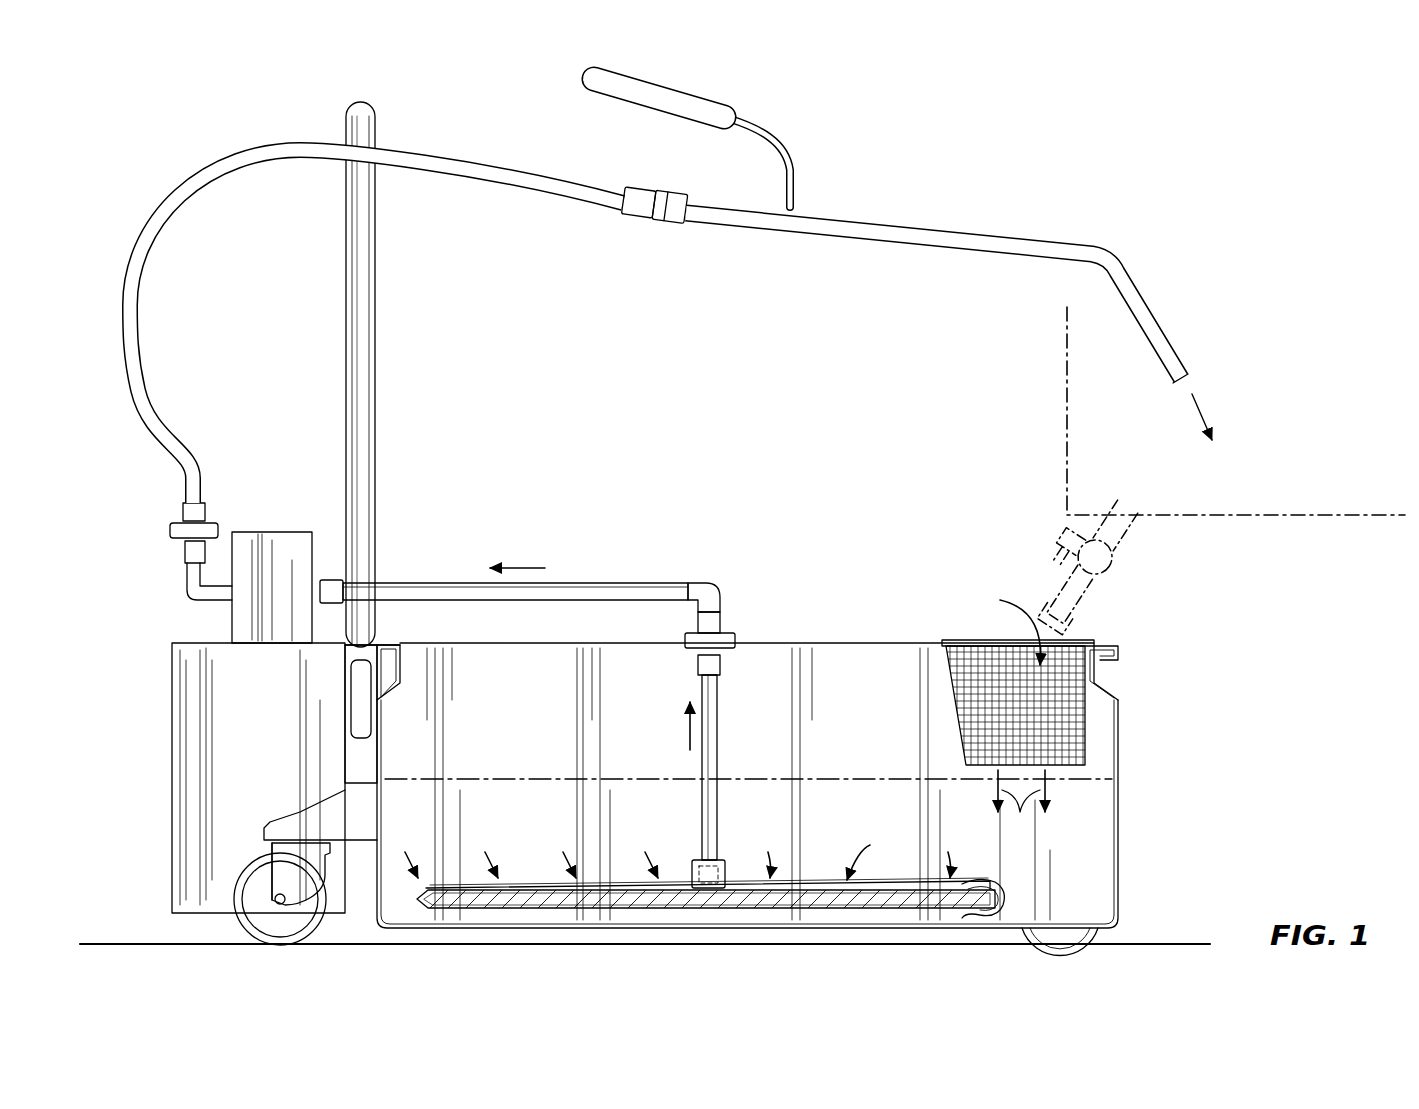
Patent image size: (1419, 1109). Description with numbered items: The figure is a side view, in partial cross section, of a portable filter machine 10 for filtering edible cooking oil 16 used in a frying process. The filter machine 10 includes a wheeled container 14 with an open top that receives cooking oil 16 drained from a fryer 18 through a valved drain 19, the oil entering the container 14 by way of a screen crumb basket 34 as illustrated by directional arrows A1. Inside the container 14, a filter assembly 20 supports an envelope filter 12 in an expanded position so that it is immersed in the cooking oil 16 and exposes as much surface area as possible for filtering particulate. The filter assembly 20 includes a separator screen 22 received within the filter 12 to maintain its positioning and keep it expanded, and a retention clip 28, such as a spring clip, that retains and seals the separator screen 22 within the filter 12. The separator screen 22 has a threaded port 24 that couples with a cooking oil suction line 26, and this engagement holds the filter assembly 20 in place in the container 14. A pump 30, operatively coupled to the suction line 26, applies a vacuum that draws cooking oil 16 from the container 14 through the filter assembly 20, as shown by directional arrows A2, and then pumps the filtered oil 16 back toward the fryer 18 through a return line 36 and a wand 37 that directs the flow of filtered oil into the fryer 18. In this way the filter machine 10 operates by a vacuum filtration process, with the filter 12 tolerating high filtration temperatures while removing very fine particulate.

The filter machine 10 is at (1165, 162).
The filter 12 is at (495, 910).
The wheeled container 14 is at (1120, 705).
The edible cooking oil 16 is at (553, 777).
The fryer 18 is at (1067, 358).
The valved drain 19 is at (1090, 600).
The filter assembly 20 is at (530, 872).
The separator screen 22 is at (715, 910).
The threaded port 24 is at (726, 870).
The cooking oil suction line 26 is at (712, 583).
The retention clip 28 is at (1005, 915).
The pump 30 is at (290, 537).
The screen crumb basket 34 is at (957, 645).
The return line 36 is at (428, 160).
The wand 37 is at (946, 224).
The directional arrows A1 is at (1021, 719).
The directional arrows A2 is at (690, 733).